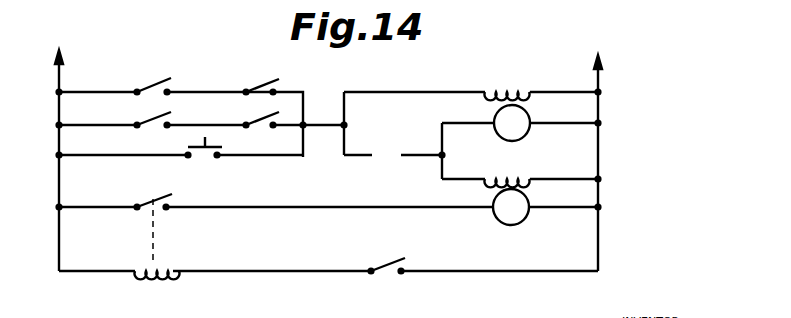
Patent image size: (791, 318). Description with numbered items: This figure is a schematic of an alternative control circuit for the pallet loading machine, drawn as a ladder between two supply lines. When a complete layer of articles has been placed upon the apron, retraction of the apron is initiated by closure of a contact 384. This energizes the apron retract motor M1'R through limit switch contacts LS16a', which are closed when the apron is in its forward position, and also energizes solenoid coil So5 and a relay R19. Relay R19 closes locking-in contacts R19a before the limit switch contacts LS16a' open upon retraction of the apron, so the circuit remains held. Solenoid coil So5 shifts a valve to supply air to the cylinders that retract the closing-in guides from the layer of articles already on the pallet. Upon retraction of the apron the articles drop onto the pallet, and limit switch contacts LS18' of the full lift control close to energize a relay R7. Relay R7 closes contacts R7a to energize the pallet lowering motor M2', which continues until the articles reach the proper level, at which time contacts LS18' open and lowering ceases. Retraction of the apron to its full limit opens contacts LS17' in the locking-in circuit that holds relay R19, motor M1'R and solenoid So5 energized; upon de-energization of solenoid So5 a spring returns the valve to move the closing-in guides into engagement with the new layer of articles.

The contact 384 is at (164, 86).
The limit switch contacts LS16a' is at (250, 77).
The locking-in contacts R19a is at (152, 119).
The limit switch contacts LS17' is at (241, 113).
The relay R19 is at (500, 88).
The apron retract motor M1'R is at (512, 123).
The solenoid coil So5 is at (505, 176).
The pallet lowering motor M2' is at (511, 207).
The contacts R7a is at (158, 200).
The limit switch contacts LS18' is at (387, 251).
The relay R7 is at (146, 278).